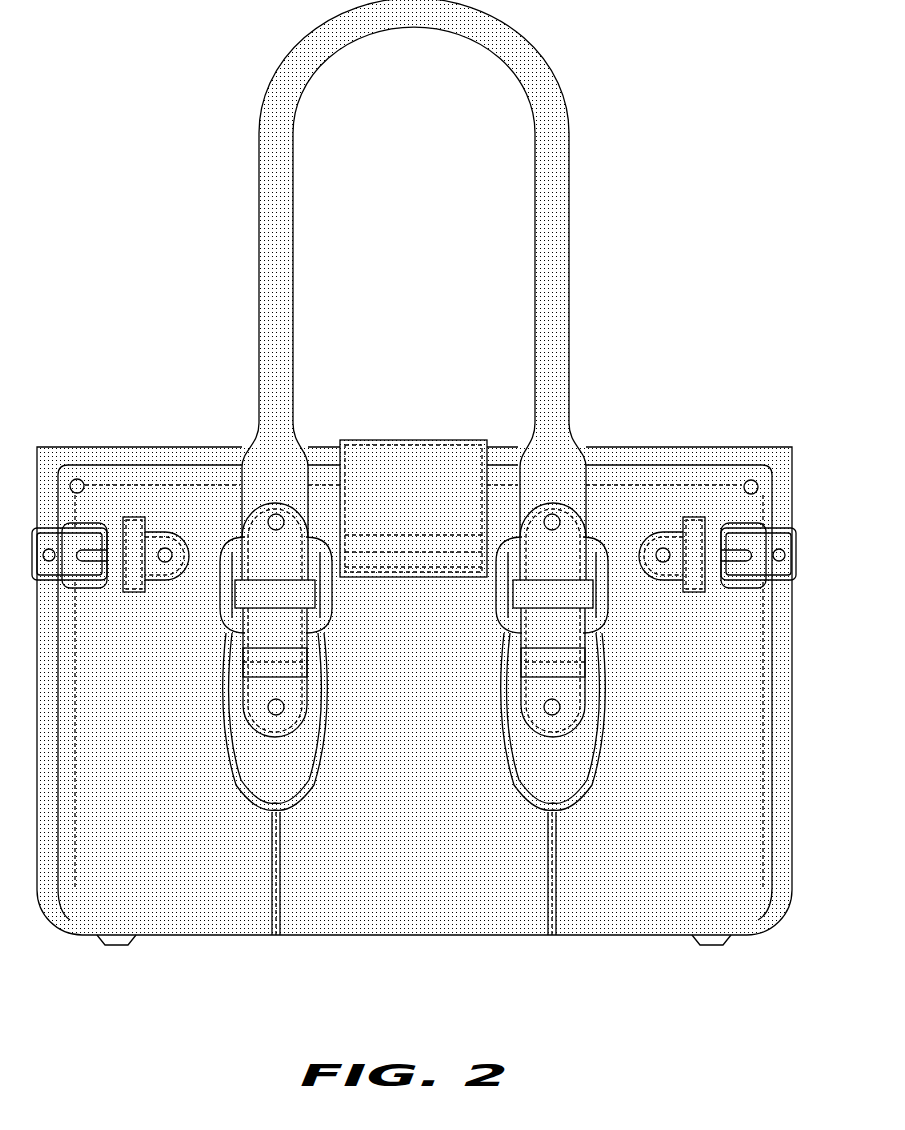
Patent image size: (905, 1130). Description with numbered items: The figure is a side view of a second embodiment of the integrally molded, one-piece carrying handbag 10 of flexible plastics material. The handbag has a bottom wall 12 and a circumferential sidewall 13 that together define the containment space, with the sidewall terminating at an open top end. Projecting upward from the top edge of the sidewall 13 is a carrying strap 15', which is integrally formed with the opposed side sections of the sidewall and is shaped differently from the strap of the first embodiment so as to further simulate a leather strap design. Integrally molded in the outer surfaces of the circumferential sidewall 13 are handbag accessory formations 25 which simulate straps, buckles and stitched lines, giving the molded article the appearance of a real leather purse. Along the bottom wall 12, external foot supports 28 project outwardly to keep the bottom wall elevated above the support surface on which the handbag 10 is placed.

The carrying handbag 10 is at (92, 94).
The bottom wall 12 is at (345, 940).
The circumferential sidewall 13 is at (123, 800).
The carrying strap 15' is at (414, 290).
The handbag accessory formations 25 is at (115, 547).
The external foot supports 28 is at (117, 944).